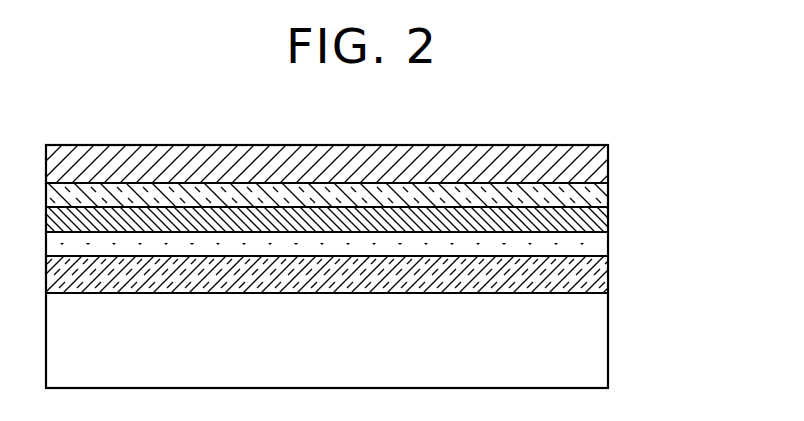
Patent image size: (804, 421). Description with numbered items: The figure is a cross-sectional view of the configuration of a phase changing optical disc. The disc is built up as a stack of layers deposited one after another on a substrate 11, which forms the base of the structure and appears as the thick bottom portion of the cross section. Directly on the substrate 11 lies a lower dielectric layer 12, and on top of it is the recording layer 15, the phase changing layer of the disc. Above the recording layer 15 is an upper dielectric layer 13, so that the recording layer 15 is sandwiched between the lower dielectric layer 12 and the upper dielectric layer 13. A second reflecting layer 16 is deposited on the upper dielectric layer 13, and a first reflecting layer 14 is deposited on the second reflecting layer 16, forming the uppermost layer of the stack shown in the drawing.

The substrate 11 is at (589, 357).
The lower dielectric layer 12 is at (594, 289).
The upper dielectric layer 13 is at (597, 226).
The first reflecting layer 14 is at (589, 164).
The recording layer 15 is at (590, 247).
The second reflecting layer 16 is at (592, 199).